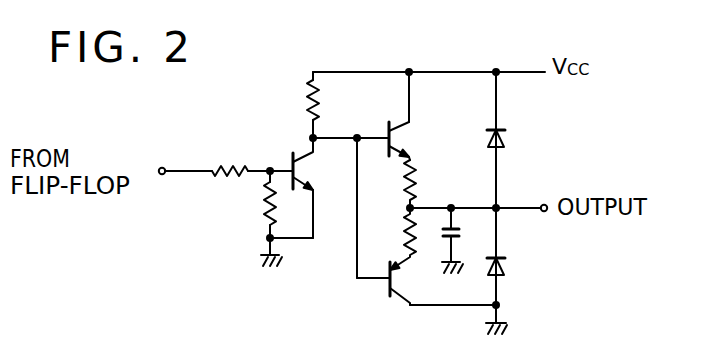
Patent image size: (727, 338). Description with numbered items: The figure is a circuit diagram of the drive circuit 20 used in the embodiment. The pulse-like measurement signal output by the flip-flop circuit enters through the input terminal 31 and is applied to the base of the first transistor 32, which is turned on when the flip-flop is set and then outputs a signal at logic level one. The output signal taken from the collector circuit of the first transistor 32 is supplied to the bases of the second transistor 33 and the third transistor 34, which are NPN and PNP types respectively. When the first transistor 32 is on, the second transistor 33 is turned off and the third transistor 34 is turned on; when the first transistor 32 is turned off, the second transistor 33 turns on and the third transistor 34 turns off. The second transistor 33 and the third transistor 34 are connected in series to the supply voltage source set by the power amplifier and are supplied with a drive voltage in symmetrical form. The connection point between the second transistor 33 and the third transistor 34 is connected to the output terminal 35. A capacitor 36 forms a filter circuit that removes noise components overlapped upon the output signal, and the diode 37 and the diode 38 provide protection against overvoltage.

The drive circuit 20 is at (562, 136).
The input terminal 31 is at (162, 175).
The first transistor 32 is at (306, 166).
The second transistor 33 is at (404, 136).
The third transistor 34 is at (402, 281).
The output terminal 35 is at (544, 212).
The capacitor 36 is at (461, 231).
The diode 37 is at (505, 137).
The diode 38 is at (503, 278).